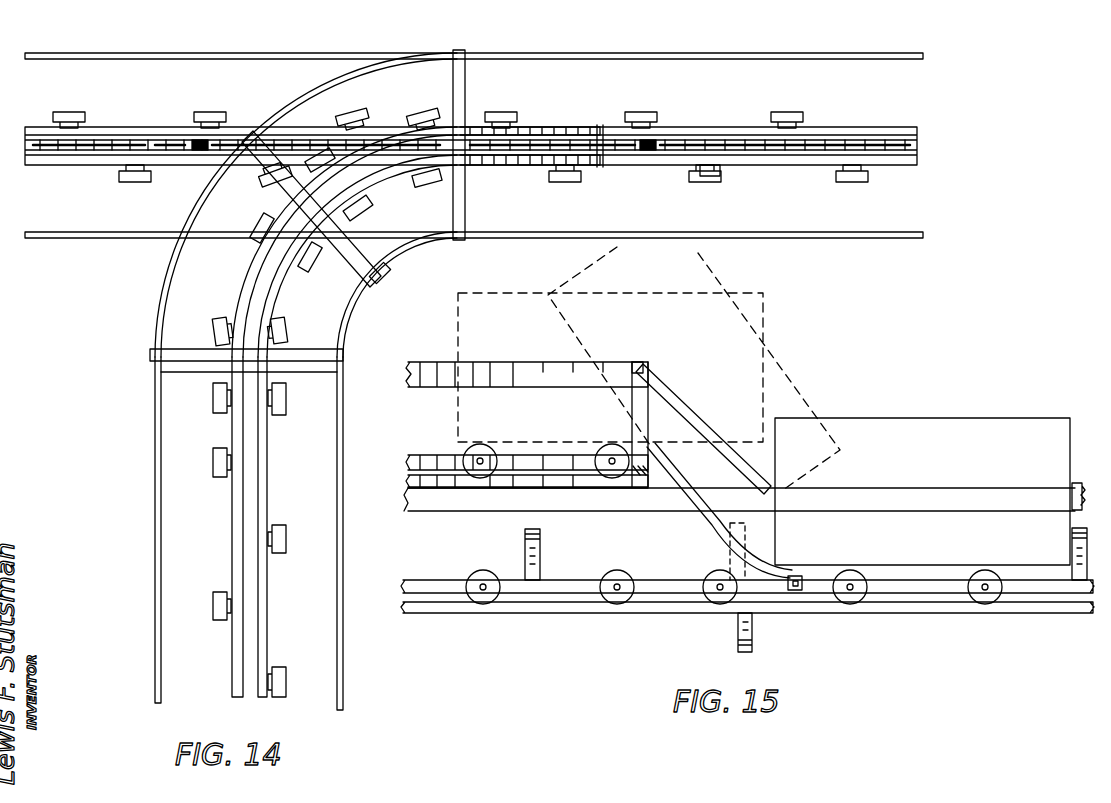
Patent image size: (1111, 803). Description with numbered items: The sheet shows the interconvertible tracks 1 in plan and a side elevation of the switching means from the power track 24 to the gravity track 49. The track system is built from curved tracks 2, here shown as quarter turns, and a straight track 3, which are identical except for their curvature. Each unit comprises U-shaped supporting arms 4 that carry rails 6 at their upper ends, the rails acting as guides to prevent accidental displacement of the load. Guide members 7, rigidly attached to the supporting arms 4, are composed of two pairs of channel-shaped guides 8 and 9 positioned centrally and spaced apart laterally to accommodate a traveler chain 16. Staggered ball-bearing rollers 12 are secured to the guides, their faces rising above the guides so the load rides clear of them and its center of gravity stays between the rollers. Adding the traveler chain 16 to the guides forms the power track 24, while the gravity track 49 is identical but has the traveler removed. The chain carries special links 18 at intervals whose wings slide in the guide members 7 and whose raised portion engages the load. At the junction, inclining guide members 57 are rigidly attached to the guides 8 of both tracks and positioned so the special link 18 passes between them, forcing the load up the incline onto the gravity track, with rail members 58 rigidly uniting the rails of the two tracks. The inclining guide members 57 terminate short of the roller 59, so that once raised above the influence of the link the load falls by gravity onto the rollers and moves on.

In FIG. 14, the interconvertible tracks 1 is at (102, 478).
In FIG. 14, the curved tracks 2 is at (350, 322).
In FIG. 14, the straight track 3 is at (838, 208).
In FIG. 14, the supporting arms 4 is at (468, 217).
In FIG. 15, the supporting arms 4 is at (628, 432).
In FIG. 14, the rails 6 is at (773, 231).
In FIG. 15, the rails 6 is at (493, 363).
In FIG. 14, the guide members 7 is at (893, 174).
In FIG. 15, the guide members 7 is at (572, 625).
In FIG. 15, the channel shaped guides 8 is at (552, 582).
In FIG. 15, the channel shaped guides 9 is at (535, 608).
In FIG. 14, the rollers 12 is at (708, 181).
In FIG. 15, the rollers 12 is at (624, 601).
In FIG. 14, the traveler chain 16 is at (917, 139).
In FIG. 14, the special links 18 is at (652, 140).
In FIG. 15, the special links 18 is at (540, 544).
In FIG. 14, the power track 24 is at (905, 95).
In FIG. 14, the gravity track 49 is at (249, 533).
In FIG. 15, the inclining guide members 57 is at (692, 514).
In FIG. 15, the rail members 58 is at (683, 411).
In FIG. 15, the roller 59 is at (625, 452).